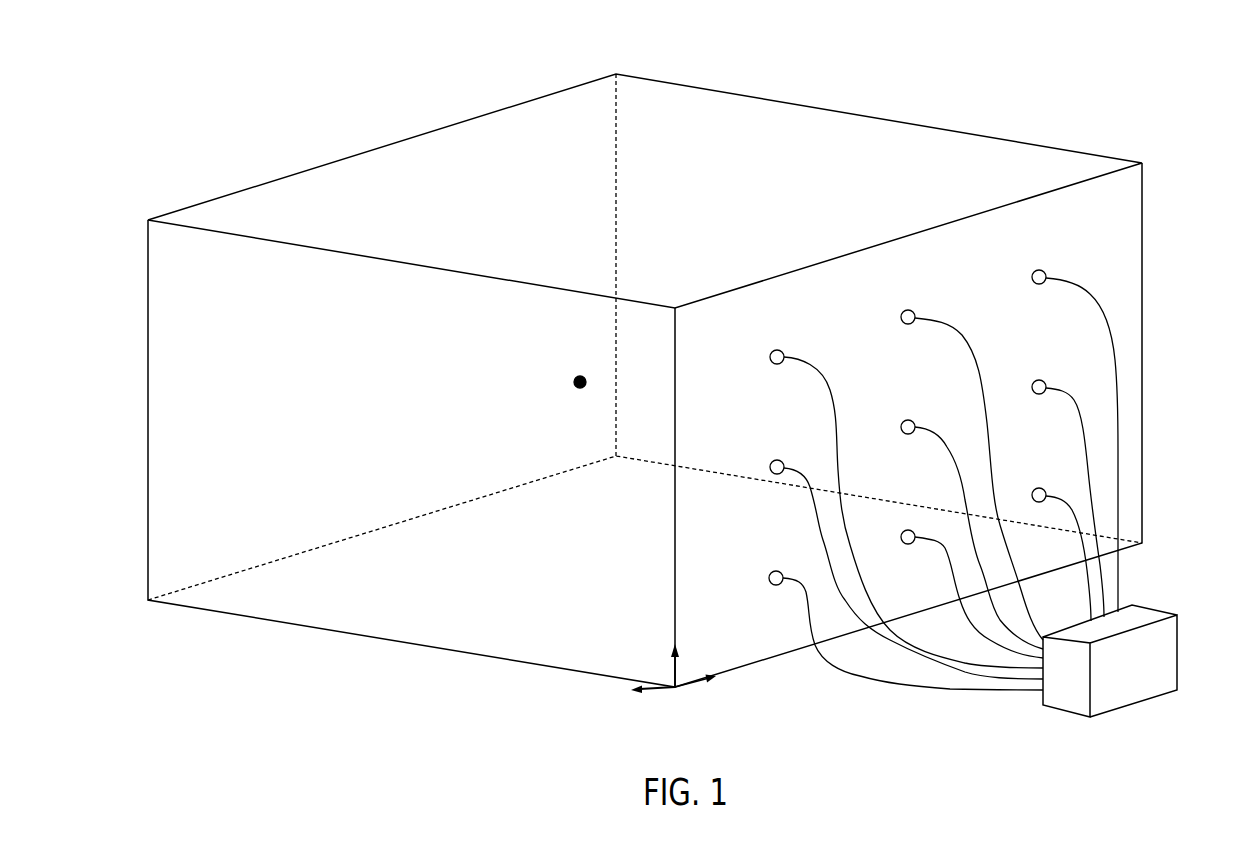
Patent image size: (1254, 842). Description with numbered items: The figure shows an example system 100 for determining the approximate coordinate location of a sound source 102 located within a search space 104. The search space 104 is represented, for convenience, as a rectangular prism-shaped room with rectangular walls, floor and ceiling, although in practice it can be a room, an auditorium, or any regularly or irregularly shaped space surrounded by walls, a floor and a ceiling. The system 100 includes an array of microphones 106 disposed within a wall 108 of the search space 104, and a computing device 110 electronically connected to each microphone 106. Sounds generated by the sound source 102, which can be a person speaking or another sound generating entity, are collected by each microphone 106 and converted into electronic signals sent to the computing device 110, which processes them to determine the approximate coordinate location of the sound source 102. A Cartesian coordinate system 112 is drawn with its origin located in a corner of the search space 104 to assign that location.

The system 100 is at (690, 380).
The sound source 102 is at (580, 377).
The search space 104 is at (852, 114).
The microphones 106 is at (903, 422).
The wall 108 is at (1123, 232).
The computing device 110 is at (1149, 685).
The Cartesian coordinate system 112 is at (694, 652).